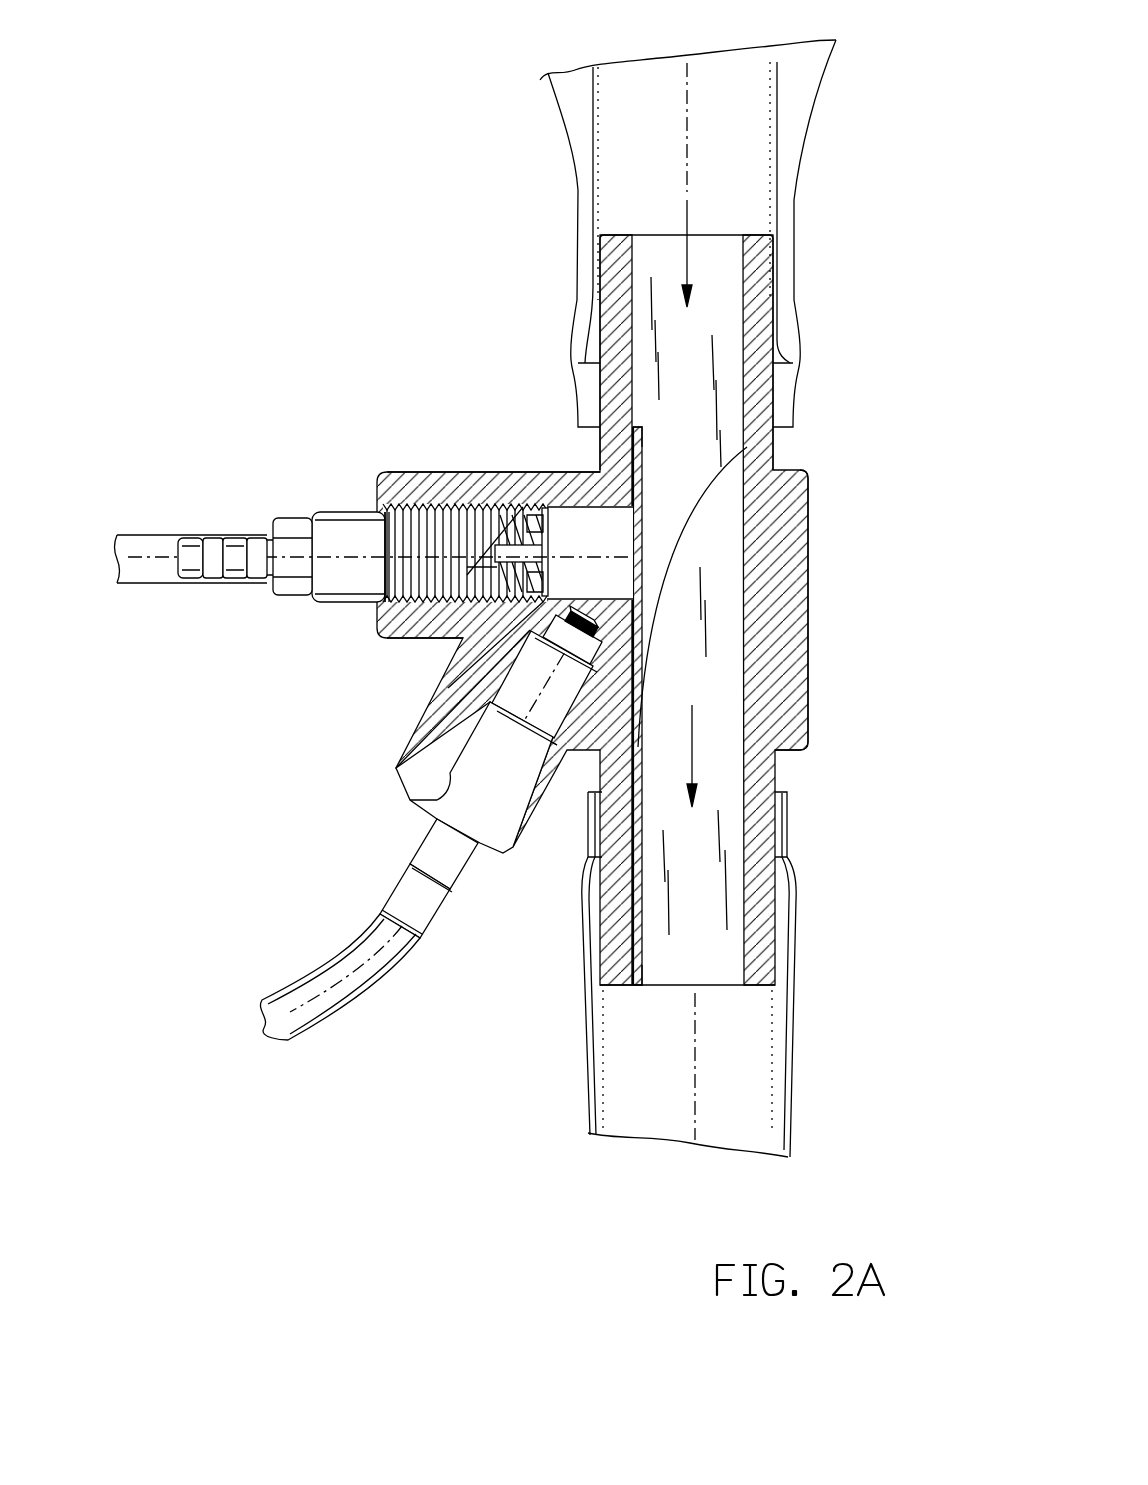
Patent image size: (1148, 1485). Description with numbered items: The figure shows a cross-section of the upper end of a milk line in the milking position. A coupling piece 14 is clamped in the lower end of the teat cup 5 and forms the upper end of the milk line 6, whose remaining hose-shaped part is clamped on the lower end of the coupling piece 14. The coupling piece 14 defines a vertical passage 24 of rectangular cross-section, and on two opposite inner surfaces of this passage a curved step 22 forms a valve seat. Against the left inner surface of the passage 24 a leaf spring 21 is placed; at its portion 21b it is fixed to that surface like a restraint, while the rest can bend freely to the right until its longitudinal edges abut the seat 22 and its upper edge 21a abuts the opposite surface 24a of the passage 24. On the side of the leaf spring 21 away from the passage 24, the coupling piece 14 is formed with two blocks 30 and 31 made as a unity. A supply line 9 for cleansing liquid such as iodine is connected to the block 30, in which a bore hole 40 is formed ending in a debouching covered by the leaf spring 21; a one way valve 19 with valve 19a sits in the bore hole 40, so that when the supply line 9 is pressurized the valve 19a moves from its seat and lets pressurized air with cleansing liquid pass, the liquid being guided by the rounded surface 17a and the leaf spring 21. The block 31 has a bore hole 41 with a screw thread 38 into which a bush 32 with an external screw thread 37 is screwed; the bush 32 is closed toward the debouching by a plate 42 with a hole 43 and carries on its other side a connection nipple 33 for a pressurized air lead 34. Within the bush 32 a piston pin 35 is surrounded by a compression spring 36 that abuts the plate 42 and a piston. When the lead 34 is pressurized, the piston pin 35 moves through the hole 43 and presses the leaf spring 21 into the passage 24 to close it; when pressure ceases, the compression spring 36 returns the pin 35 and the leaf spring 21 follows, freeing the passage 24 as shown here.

The teat cup 5 is at (794, 116).
The milk line 6 is at (785, 1047).
The supply line 9 is at (305, 977).
The coupling piece 14 is at (806, 750).
The rounded surface 17a is at (603, 470).
The one way valve 19 is at (433, 700).
The valve 19a is at (513, 680).
The leaf spring 21 is at (638, 465).
The upper edge 21a is at (638, 425).
The portion 21b is at (634, 978).
The curved step 22 is at (717, 513).
The vertical passage 24 is at (733, 670).
The opposite surface 24a is at (733, 410).
The block 30 is at (418, 753).
The block 31 is at (425, 472).
The bush 32 is at (338, 527).
The connection nipple 33 is at (237, 538).
The pressurized air lead 34 is at (153, 540).
The piston pin 35 is at (530, 510).
The compression spring 36 is at (470, 505).
The external screw thread 37 is at (405, 470).
The screw thread 38 is at (377, 627).
The bore hole 40 is at (440, 817).
The bore hole 41 is at (385, 605).
The plate 42 is at (548, 527).
The hole 43 is at (545, 578).